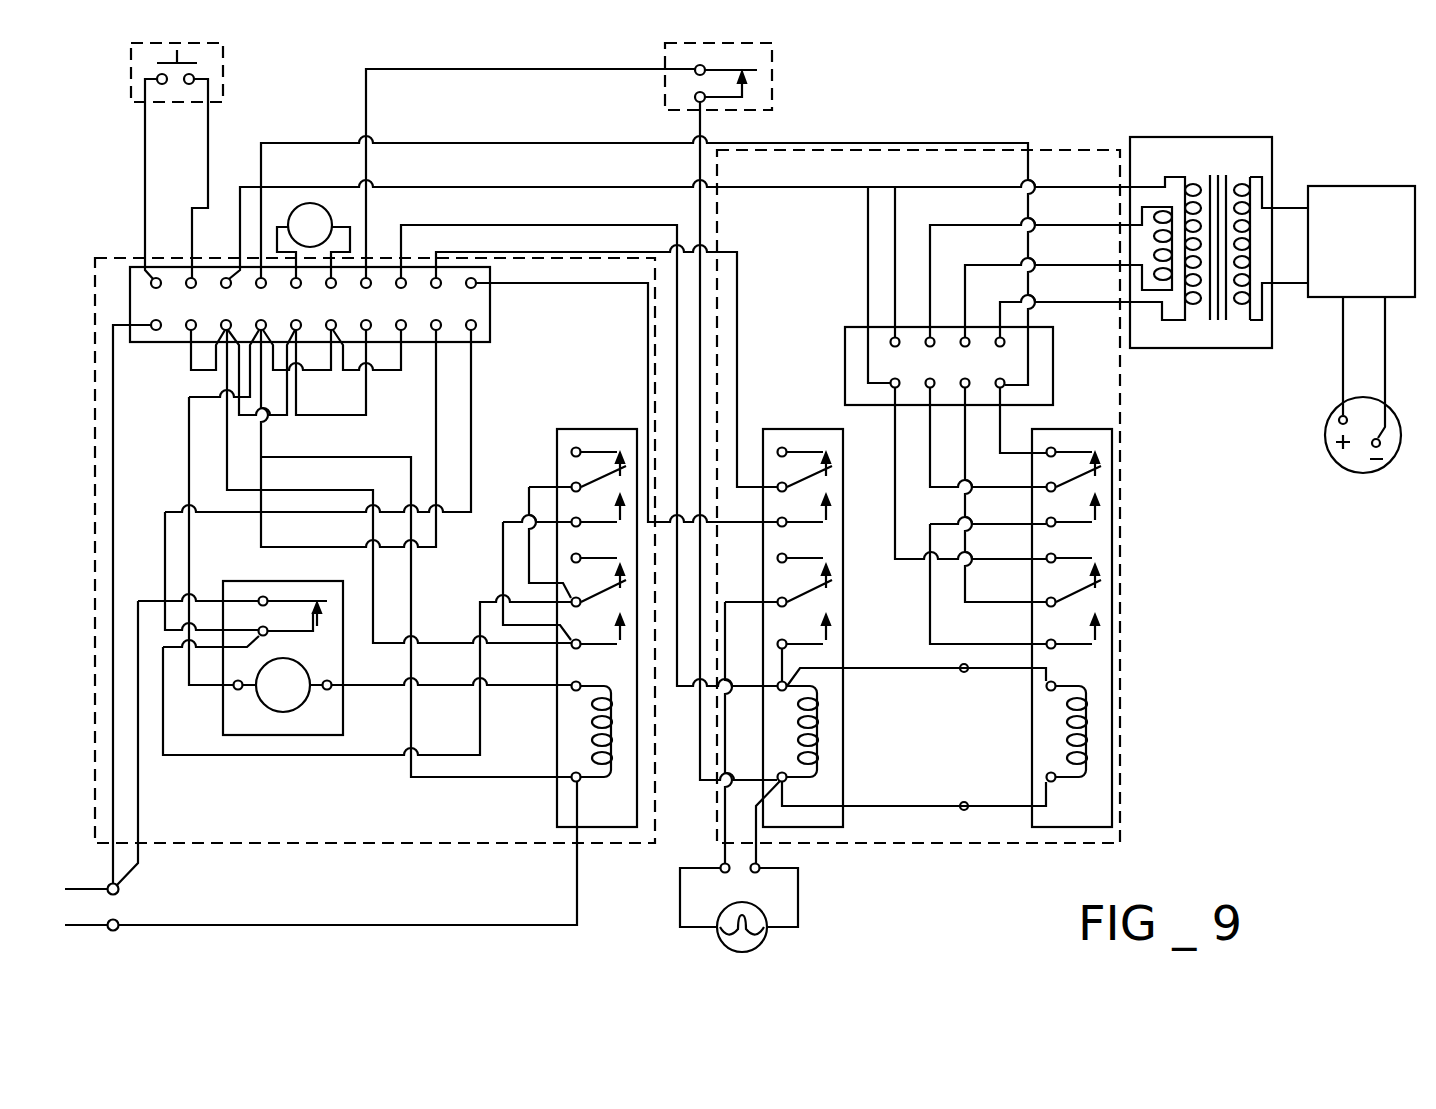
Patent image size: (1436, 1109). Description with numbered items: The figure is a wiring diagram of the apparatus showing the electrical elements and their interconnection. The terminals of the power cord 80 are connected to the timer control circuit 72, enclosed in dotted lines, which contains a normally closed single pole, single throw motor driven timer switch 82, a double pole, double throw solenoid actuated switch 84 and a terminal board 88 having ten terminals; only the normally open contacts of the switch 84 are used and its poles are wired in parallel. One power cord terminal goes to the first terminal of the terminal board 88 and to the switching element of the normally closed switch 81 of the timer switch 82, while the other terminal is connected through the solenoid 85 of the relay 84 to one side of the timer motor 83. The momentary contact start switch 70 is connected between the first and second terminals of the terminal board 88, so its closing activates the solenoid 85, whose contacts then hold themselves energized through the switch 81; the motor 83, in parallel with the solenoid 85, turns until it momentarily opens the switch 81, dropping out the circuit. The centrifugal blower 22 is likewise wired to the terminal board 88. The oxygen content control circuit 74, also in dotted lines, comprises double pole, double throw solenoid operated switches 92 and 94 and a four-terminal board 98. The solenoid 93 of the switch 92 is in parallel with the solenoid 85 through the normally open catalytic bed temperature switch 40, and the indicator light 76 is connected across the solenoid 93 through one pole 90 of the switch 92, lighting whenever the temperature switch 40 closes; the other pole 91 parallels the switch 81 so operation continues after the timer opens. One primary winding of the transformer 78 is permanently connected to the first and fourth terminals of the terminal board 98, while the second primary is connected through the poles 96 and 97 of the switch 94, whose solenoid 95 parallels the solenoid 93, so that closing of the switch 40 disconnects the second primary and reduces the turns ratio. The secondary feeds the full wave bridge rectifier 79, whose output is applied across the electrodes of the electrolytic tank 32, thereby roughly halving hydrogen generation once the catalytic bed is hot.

The centrifugal blower 22 is at (305, 202).
The electrolytic tank 32 is at (1357, 472).
The catalytic bed temperature switch 40 is at (774, 80).
The start switch 70 is at (225, 75).
The timer control circuit 72 is at (95, 611).
The oxygen content control circuit 74 is at (1122, 580).
The indicator light 76 is at (766, 940).
The transformer 78 is at (1178, 136).
The full wave bridge rectifier 79 is at (1346, 248).
The power cord 80 is at (95, 921).
The normally closed switch 81 is at (288, 618).
The motor driven timer switch 82 is at (281, 668).
The timer motor 83 is at (283, 712).
The solenoid actuated switch 84 is at (570, 604).
The solenoid 85 is at (590, 740).
The terminal board 88 is at (492, 325).
The pole 90 is at (822, 606).
The pole 91 is at (822, 487).
The solenoid operated switch 92 is at (834, 604).
The solenoid 93 is at (822, 730).
The solenoid operated switch 94 is at (1129, 604).
The solenoid 95 is at (1090, 732).
The pole 96 is at (1094, 488).
The pole 97 is at (1100, 602).
The terminal board 98 is at (845, 330).